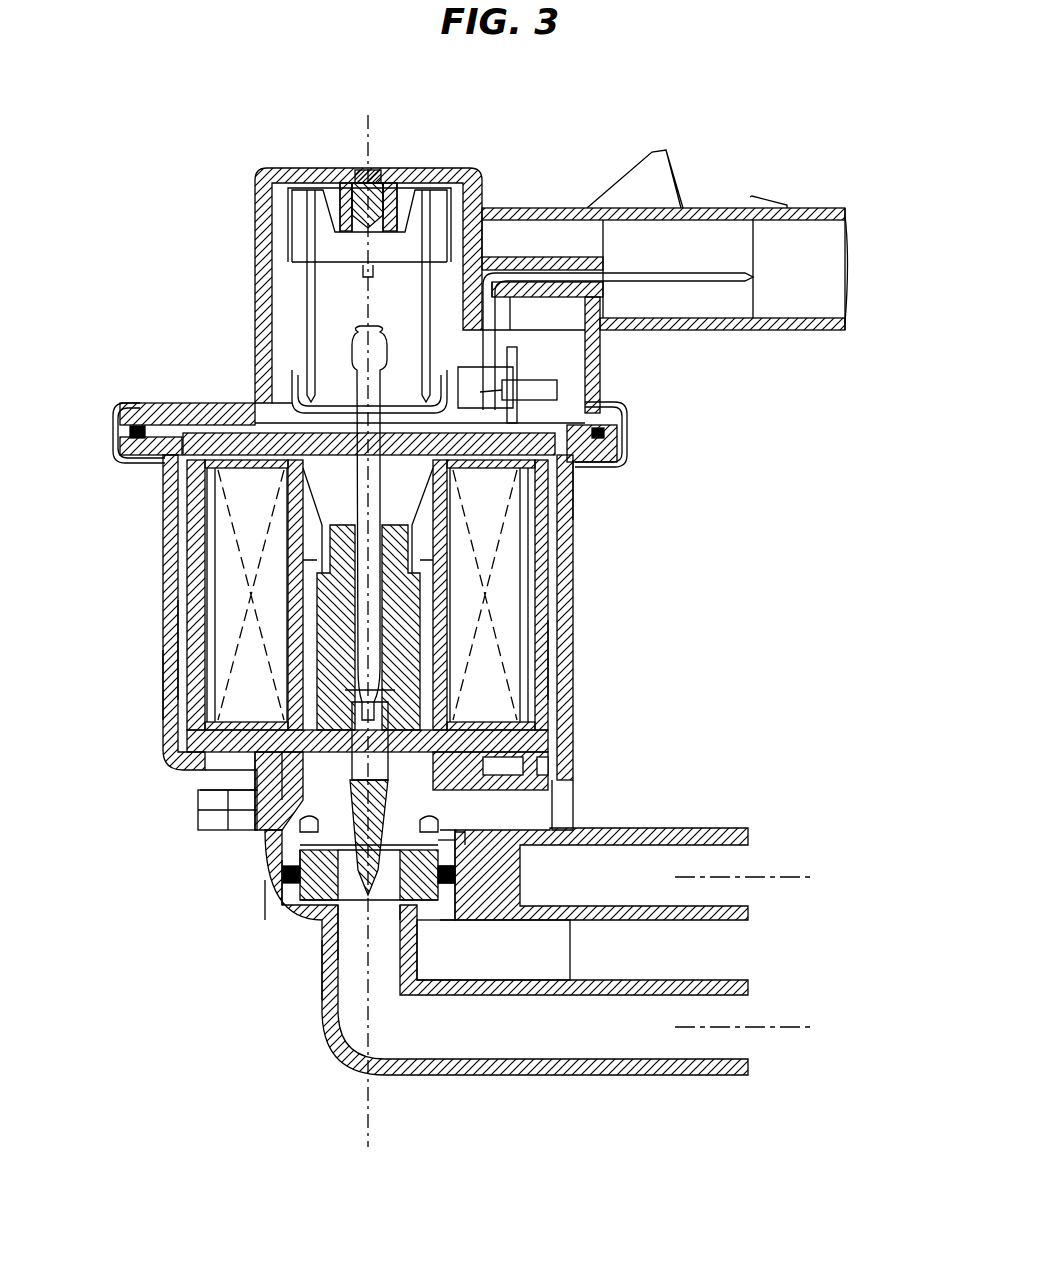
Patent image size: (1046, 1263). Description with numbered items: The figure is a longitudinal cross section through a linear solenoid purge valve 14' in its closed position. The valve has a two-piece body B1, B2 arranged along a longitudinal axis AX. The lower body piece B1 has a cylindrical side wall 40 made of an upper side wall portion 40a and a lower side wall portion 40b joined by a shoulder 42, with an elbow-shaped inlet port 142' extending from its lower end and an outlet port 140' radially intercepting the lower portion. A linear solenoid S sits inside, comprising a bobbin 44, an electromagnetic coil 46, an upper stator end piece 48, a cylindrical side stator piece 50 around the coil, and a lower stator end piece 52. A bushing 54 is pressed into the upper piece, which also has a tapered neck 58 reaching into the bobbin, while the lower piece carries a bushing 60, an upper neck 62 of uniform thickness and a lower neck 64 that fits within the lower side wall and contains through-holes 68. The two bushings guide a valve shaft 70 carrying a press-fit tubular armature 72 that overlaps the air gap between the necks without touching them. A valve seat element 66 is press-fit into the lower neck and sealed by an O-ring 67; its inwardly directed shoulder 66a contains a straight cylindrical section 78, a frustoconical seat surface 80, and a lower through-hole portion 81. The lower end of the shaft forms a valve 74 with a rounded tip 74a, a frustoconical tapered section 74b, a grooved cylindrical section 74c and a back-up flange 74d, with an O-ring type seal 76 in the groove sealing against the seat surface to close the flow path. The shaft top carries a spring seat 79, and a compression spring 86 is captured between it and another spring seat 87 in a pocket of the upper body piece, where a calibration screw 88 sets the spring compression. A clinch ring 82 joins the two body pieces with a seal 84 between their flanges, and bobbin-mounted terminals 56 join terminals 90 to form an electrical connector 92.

The linear solenoid purge valve 14' is at (348, 249).
The longitudinal axis AX is at (373, 130).
The upper body piece B2 is at (255, 212).
The calibration screw 88 is at (380, 178).
The upper spring seat 87 is at (475, 196).
The connector terminals 90 is at (707, 270).
The electrical connector 92 is at (850, 298).
The compression spring 86 is at (300, 290).
The shaft spring seat 79 is at (296, 400).
The bobbin-mounted electrical terminals 56 is at (518, 390).
The seal 84 is at (112, 432).
The clinch ring 82 is at (630, 435).
The upper stator end piece 48 is at (183, 470).
The side stator piece 50 is at (556, 493).
The cylindrical side wall 40 is at (166, 548).
The upper side wall portion 40a is at (166, 692).
The lower side wall portion 40b is at (280, 912).
The lower body piece B1 is at (166, 652).
The bobbin 44 is at (233, 707).
The electromagnetic coil 46 is at (236, 725).
The upper bushing 54 is at (330, 545).
The upper neck 58 is at (500, 522).
The valve shaft 70 is at (382, 607).
The tubular armature 72 is at (447, 565).
The lower bushing 60 is at (450, 748).
The upper neck of lower stator piece 62 is at (440, 695).
The lower stator end piece 52 is at (200, 795).
The shoulder 42 is at (262, 842).
The lower neck 64 is at (290, 848).
The through-holes 68 is at (300, 826).
The valve seat element 66 is at (430, 995).
The inwardly directed shoulder 66a is at (322, 992).
The valve 74 is at (392, 872).
The rounded tip 74a is at (372, 900).
The frustoconical tapered section 74b is at (346, 985).
The grooved cylindrical section 74c is at (460, 840).
The back-up flange 74d is at (310, 852).
The O-ring type seal 76 is at (466, 838).
The straight cylindrical section 78 is at (446, 870).
The O-ring 67 is at (450, 886).
The frustoconical seat surface 80 is at (318, 902).
The lower through-hole portion 81 is at (386, 925).
The linear solenoid S is at (552, 655).
The outlet port 140' is at (751, 849).
The inlet port 142' is at (751, 999).